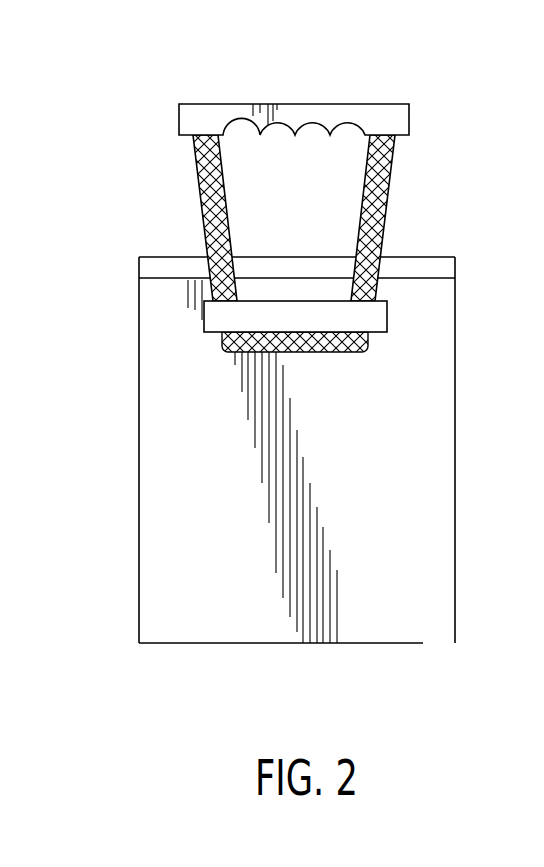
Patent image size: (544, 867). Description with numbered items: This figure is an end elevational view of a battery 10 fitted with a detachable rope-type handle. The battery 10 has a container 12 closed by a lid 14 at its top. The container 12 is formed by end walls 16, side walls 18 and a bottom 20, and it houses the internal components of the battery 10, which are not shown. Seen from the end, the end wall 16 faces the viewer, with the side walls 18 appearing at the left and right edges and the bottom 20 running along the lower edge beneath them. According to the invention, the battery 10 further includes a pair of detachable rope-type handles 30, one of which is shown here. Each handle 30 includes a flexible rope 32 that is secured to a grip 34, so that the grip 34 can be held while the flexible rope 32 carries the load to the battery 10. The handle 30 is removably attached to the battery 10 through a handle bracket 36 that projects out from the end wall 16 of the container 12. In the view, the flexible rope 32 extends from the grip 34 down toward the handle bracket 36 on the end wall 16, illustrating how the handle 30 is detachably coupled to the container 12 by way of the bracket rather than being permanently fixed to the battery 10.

The battery 10 is at (122, 510).
The container 12 is at (438, 483).
The lid 14 is at (415, 257).
The end wall 16 is at (352, 462).
The side walls 18 is at (139, 585).
The bottom 20 is at (295, 643).
The rope-type handle 30 is at (152, 109).
The flexible rope 32 is at (205, 213).
The grip 34 is at (398, 120).
The handle bracket 36 is at (387, 315).